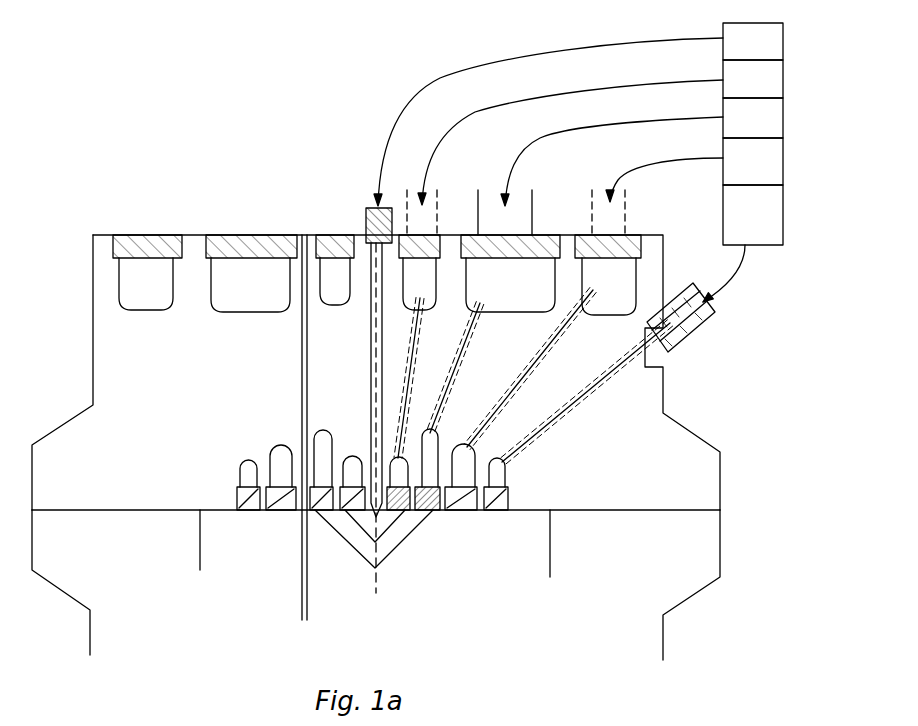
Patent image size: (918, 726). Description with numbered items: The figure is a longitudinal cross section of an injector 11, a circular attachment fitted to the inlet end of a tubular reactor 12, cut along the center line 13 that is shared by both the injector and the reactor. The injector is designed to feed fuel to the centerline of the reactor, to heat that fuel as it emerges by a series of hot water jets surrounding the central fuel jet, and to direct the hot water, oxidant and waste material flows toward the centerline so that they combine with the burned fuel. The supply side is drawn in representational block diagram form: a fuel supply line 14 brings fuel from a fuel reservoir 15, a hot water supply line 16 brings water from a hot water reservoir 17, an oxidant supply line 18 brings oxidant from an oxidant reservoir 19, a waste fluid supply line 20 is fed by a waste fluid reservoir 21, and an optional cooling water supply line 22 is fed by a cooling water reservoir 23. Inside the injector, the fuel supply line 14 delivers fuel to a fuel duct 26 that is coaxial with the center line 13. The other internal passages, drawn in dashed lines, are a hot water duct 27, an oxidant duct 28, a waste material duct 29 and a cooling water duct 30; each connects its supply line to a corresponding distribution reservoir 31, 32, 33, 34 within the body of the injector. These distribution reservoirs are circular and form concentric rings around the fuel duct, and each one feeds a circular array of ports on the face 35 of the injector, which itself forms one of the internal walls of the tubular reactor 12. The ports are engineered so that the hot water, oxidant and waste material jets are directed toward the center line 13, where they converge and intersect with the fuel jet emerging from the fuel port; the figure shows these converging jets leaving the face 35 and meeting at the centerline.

The injector 11 is at (93, 372).
The tubular reactor 12 is at (90, 630).
The center line 13 is at (377, 370).
The fuel supply line 14 is at (478, 70).
The fuel reservoir 15 is at (784, 41).
The hot water supply line 16 is at (537, 103).
The hot water reservoir 17 is at (784, 80).
The oxidant supply line 18 is at (622, 123).
The oxidant reservoir 19 is at (784, 121).
The waste fluid supply line 20 is at (695, 158).
The waste fluid reservoir 21 is at (784, 163).
The cooling water supply line 22 is at (730, 280).
The cooling water reservoir 23 is at (784, 216).
The fuel duct 26 is at (372, 418).
The hot water duct 27 is at (417, 352).
The oxidant duct 28 is at (458, 375).
The waste material duct 29 is at (520, 388).
The cooling water duct 30 is at (553, 425).
The distribution reservoir 31 is at (397, 510).
The distribution reservoir 32 is at (433, 513).
The distribution reservoir 33 is at (467, 510).
The distribution reservoir 34 is at (503, 510).
The face 35 is at (224, 508).